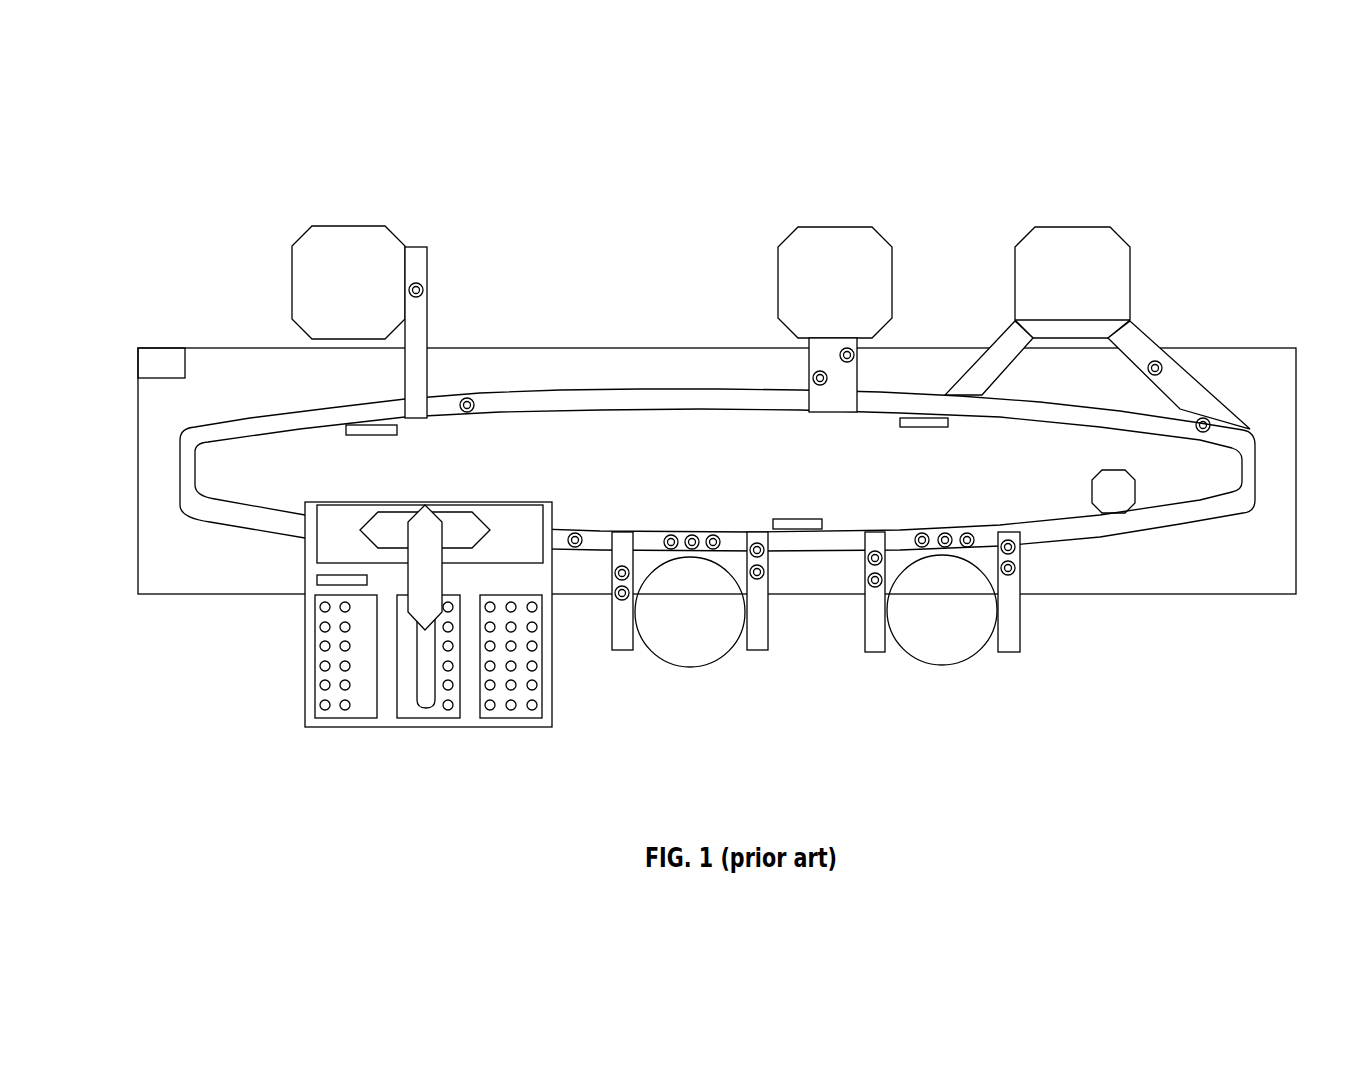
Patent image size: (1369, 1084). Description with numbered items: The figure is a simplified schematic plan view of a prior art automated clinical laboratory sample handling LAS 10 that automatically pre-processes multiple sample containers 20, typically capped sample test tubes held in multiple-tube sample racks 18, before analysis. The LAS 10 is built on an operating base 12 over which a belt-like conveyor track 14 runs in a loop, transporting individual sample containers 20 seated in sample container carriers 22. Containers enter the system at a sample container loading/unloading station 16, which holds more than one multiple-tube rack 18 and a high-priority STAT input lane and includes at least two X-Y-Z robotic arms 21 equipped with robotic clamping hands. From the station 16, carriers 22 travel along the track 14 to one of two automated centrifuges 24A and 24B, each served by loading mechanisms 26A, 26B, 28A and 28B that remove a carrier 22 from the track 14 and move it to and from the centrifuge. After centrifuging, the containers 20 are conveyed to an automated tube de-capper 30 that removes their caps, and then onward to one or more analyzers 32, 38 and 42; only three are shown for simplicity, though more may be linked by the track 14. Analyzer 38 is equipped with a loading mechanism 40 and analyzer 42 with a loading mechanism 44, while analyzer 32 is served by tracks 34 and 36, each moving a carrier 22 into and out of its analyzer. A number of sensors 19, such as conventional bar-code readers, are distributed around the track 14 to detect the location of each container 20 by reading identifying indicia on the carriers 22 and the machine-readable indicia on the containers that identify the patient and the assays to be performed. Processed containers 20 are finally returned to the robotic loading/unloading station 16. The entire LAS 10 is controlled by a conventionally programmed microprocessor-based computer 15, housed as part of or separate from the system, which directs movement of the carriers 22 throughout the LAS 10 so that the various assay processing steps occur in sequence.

The automated clinical laboratory sample handling LAS 10 is at (230, 257).
The operating base 12 is at (138, 383).
The conveyor track 14 is at (187, 497).
The computer 15 is at (158, 358).
The sample container loading/unloading station 16 is at (350, 668).
The multiple-tube sample rack 18 is at (313, 653).
The sensor 19 is at (397, 430).
The sample container 20 is at (511, 705).
The X-Y-Z robotic arm 21 is at (350, 530).
The sample container carrier 22 is at (467, 405).
The automated centrifuge 24A is at (660, 625).
The automated centrifuge 24B is at (918, 622).
The loading mechanism 26A is at (612, 610).
The loading mechanism 26B is at (870, 652).
The loading mechanism 28A is at (768, 607).
The loading mechanism 28B is at (1020, 613).
The automated tube de-capper 30 is at (1120, 493).
The analyzer 32 is at (1055, 297).
The track 34 is at (1180, 373).
The track 36 is at (1000, 352).
The analyzer 38 is at (817, 297).
The loading mechanism 40 is at (809, 362).
The analyzer 42 is at (333, 297).
The loading mechanism 44 is at (430, 347).